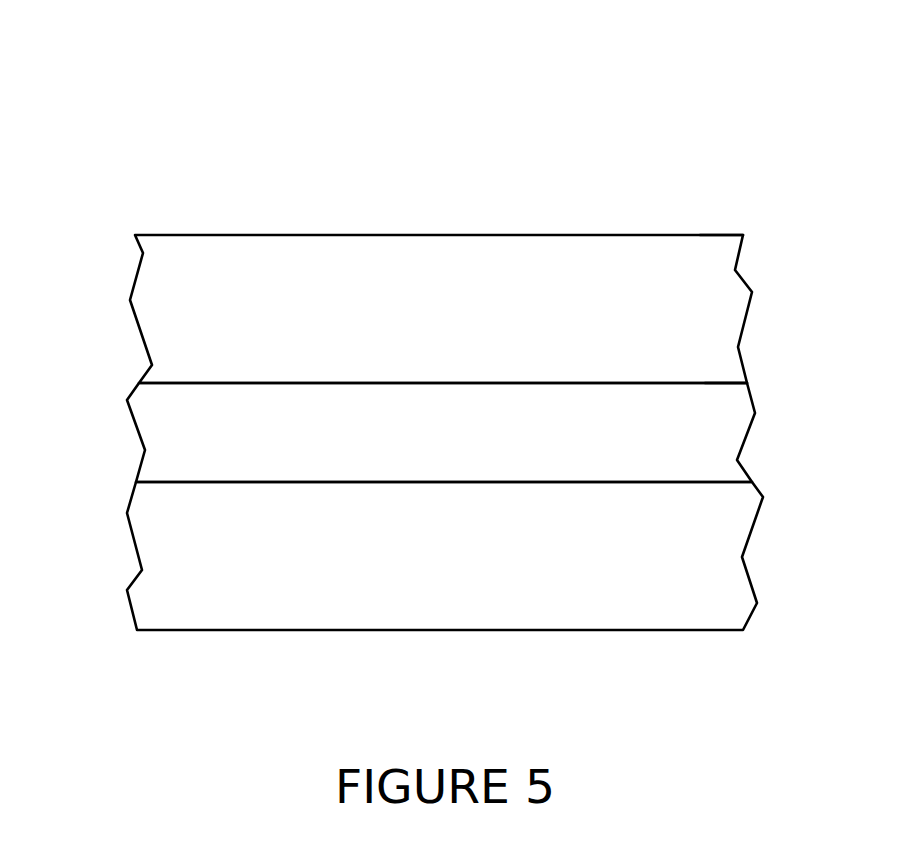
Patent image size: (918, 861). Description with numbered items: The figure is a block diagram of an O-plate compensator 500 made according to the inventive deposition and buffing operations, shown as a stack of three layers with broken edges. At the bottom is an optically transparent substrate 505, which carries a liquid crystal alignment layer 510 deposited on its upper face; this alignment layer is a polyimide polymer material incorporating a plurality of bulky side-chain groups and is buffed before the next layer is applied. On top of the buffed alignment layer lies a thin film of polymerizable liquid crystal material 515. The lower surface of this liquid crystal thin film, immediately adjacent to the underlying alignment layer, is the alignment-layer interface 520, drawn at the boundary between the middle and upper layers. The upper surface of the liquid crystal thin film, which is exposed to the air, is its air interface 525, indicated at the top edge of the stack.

The O-plate compensator 500 is at (436, 324).
The optically transparent substrate 505 is at (163, 560).
The liquid crystal alignment layer 510 is at (160, 465).
The polymerizable liquid crystal material thin film 515 is at (148, 295).
The alignment-layer interface 520 is at (705, 383).
The air interface 525 is at (695, 235).